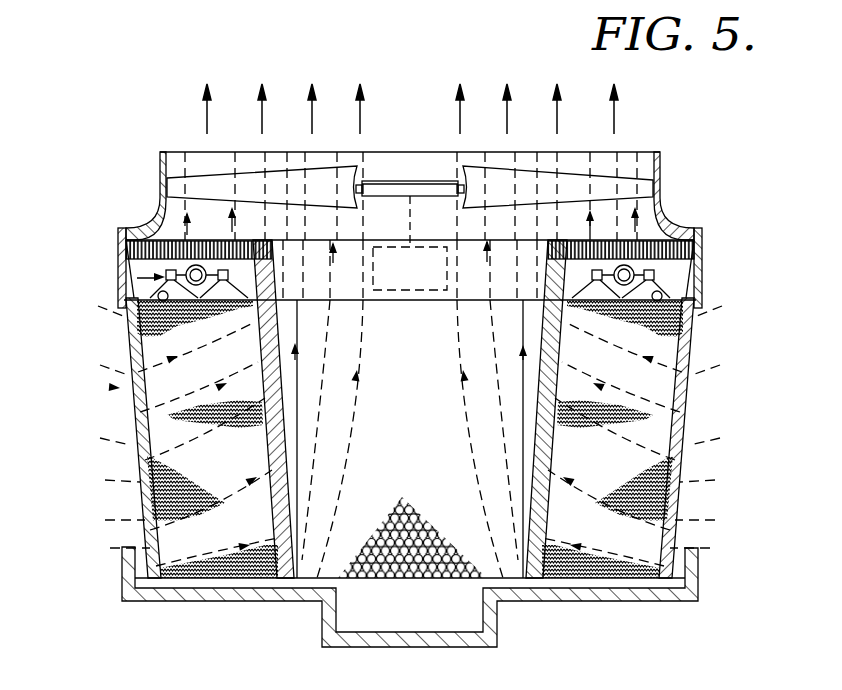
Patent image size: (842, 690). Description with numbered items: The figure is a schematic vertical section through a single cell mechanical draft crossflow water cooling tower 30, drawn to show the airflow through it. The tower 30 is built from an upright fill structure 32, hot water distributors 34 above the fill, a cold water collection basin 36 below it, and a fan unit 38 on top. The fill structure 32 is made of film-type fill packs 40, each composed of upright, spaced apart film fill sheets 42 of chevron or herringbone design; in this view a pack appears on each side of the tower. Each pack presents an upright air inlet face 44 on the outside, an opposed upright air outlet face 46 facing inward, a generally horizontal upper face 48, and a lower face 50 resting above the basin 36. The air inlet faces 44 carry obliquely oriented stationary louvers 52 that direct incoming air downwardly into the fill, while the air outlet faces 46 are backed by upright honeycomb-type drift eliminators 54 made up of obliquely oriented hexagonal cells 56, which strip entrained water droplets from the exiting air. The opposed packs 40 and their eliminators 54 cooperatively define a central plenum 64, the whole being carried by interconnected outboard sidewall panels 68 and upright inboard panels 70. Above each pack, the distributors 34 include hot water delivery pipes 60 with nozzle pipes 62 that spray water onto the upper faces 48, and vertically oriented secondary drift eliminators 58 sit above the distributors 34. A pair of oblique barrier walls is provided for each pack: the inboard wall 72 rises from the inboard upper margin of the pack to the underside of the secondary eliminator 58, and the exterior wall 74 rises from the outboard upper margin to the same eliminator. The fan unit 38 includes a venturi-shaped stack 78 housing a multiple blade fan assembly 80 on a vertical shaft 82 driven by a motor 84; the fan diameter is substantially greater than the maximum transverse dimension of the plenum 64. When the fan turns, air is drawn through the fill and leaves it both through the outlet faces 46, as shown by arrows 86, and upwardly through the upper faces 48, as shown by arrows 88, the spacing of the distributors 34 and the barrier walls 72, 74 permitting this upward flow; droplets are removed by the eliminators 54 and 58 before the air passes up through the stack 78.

The water cooling tower 30 is at (150, 124).
The fill structure 32 is at (108, 387).
The hot water distributors 34 is at (137, 278).
The cold water collection basin 36 is at (186, 614).
The fan unit 38 is at (682, 160).
The fill packs 40 is at (690, 381).
The film fill sheets 42 is at (690, 441).
The air inlet faces 44 is at (142, 481).
The air outlet faces 46 is at (262, 383).
The upper face 48 is at (134, 323).
The lower face 50 is at (247, 578).
The louvers 52 is at (138, 440).
The drift eliminators 54 is at (298, 490).
The cells 56 is at (398, 582).
The secondary drift eliminators 58 is at (130, 243).
The hot water delivery pipes 60 is at (216, 263).
The nozzle pipes 62 is at (155, 230).
The central plenum 64 is at (410, 439).
The outboard sidewall panels 68 is at (118, 252).
The inboard panels 70 is at (274, 252).
The barrier wall 72 is at (278, 280).
The exterior barrier wall 74 is at (122, 288).
The venturi-shaped stack 78 is at (662, 152).
The fan assembly 80 is at (567, 180).
The vertical shaft 82 is at (428, 180).
The motor 84 is at (437, 296).
The arrows 86 is at (673, 531).
The arrows 88 is at (637, 230).